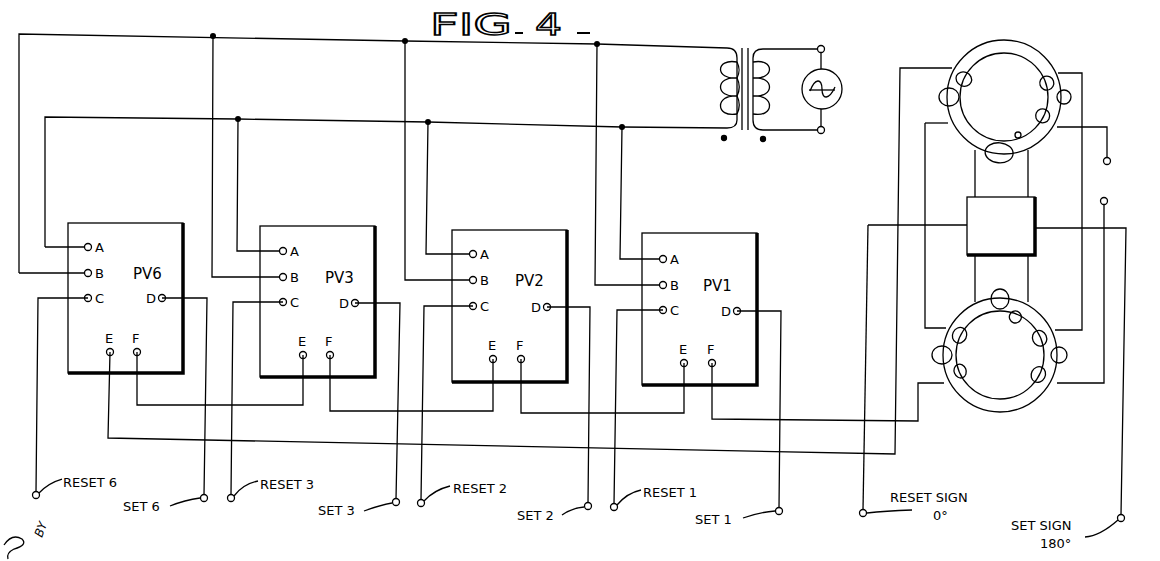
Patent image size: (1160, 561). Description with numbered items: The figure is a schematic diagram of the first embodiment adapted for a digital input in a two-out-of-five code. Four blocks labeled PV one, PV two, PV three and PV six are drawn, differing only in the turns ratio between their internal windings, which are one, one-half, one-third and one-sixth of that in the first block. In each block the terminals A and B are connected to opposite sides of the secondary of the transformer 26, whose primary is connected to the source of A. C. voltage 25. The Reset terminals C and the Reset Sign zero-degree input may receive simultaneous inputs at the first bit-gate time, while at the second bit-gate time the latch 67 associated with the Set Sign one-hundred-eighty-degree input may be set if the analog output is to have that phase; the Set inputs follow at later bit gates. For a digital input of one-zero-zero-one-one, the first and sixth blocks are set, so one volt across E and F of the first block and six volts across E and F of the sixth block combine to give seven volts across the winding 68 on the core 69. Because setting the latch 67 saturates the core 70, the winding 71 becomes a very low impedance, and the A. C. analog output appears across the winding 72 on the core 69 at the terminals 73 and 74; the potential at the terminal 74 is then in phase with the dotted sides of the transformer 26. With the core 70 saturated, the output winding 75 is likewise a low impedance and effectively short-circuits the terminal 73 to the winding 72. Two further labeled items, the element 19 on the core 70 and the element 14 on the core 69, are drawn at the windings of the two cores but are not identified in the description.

The transformer 26 is at (750, 46).
The source of A. C. voltage 25 is at (836, 76).
The core 70 is at (1049, 66).
The winding 71 is at (968, 79).
The output winding 75 is at (1071, 97).
The stator winding 19 is at (1016, 133).
The terminal 73 is at (1111, 159).
The terminal 74 is at (1108, 199).
The latch 67 is at (1036, 247).
The stator winding 14 is at (1013, 322).
The winding 68 is at (963, 370).
The winding 72 is at (1069, 357).
The core 69 is at (1013, 405).